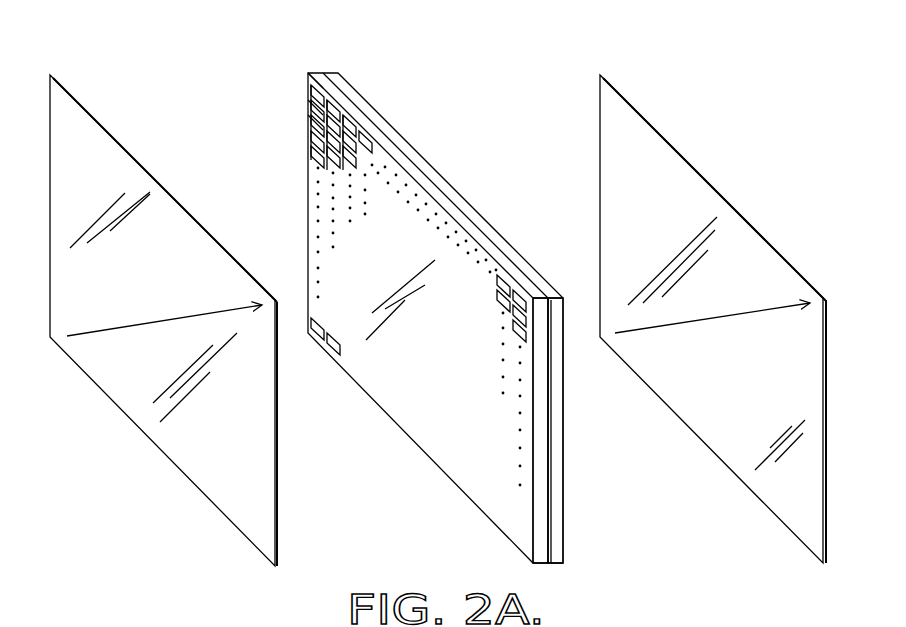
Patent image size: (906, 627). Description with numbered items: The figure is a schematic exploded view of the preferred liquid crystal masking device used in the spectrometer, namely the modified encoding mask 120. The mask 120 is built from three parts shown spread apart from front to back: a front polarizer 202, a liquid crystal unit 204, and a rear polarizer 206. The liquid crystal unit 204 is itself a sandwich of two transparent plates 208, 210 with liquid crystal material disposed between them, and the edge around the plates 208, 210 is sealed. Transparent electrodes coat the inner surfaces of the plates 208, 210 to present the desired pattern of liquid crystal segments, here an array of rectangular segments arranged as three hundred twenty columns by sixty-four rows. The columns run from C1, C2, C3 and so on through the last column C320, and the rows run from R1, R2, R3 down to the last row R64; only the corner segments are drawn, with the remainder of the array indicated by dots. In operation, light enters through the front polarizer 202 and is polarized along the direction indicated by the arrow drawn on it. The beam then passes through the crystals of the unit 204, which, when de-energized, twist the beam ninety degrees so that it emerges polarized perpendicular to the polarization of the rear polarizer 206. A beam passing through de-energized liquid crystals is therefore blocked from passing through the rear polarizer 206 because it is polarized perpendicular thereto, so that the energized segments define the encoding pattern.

The mask 120 is at (808, 92).
The front polarizer 202 is at (200, 480).
The liquid crystal unit 204 is at (455, 478).
The rear polarizer 206 is at (733, 453).
The transparent plate 208 is at (540, 565).
The transparent plate 210 is at (556, 566).
The row R1 is at (308, 82).
The row R2 is at (308, 102).
The row R3 is at (308, 118).
The row R64 is at (308, 318).
The column C1 is at (318, 78).
The column C2 is at (335, 93).
The column C3 is at (351, 110).
The column C320 is at (520, 290).